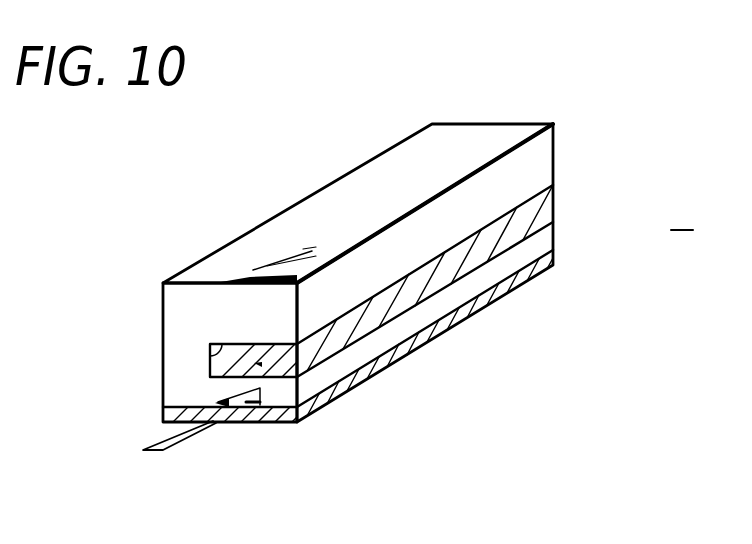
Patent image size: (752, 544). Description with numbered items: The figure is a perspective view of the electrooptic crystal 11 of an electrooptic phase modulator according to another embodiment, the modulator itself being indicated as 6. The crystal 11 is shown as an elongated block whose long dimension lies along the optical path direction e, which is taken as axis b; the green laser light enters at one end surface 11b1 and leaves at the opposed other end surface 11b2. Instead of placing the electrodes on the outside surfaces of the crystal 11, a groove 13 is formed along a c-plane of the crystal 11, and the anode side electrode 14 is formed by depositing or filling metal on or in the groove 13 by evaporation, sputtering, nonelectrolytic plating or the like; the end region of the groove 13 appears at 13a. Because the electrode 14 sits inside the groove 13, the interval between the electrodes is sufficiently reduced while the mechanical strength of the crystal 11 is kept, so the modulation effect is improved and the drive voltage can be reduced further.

The optical element 6 is at (682, 216).
The electrooptic crystal 11 is at (535, 159).
The one end surface 11b1 is at (282, 395).
The other end surface 11b2 is at (554, 235).
The groove 13 is at (210, 362).
The end portion of light guide layer 13a is at (258, 365).
The anode side electrode 14 is at (445, 268).
The optical path direction e is at (190, 435).